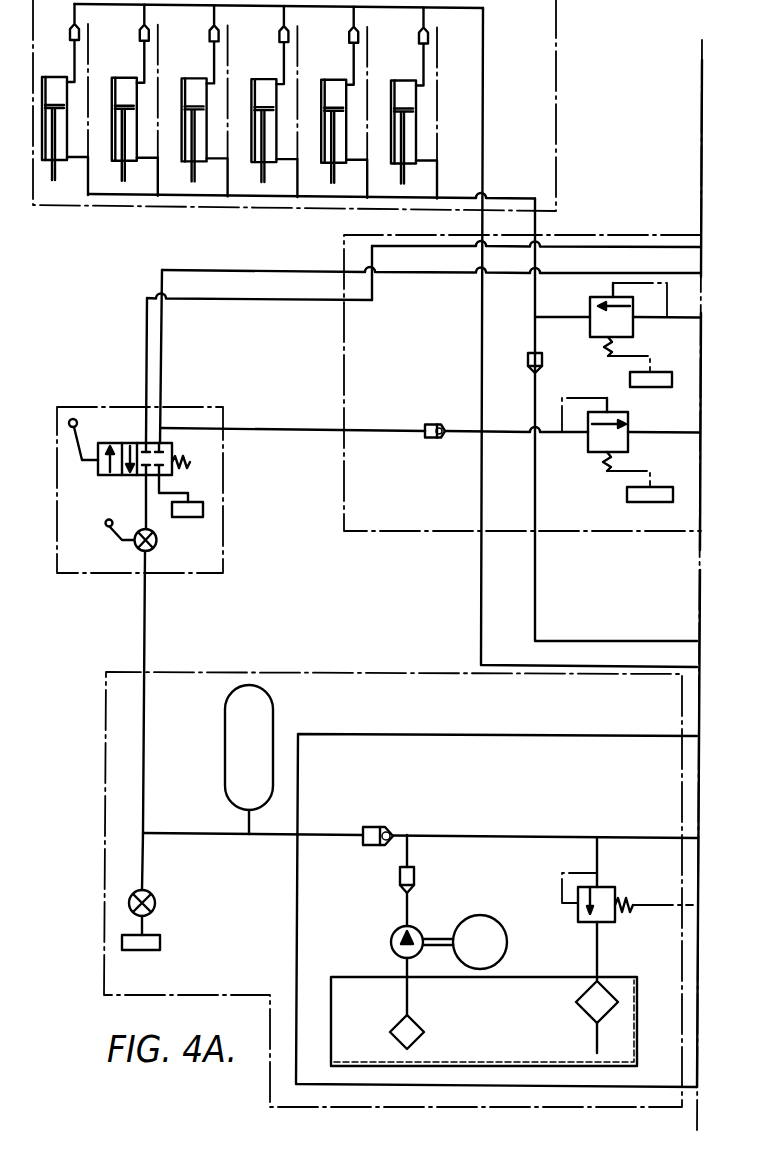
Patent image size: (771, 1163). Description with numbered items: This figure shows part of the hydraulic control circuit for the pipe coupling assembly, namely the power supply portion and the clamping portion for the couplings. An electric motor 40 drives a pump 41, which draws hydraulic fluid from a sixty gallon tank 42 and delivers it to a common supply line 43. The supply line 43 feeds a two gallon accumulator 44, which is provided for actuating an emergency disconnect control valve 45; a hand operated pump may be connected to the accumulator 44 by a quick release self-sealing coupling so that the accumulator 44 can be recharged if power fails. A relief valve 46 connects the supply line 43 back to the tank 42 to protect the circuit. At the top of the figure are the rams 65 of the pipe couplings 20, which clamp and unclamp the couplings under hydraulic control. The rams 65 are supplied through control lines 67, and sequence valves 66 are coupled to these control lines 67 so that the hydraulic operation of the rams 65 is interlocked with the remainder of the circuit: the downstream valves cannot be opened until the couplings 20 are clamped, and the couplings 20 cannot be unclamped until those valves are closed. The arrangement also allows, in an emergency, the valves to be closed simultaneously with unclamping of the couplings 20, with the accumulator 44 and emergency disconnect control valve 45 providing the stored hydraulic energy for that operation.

The pipe coupling 20 is at (145, 180).
The ram 65 is at (58, 77).
The sequence valve 66 is at (590, 323).
The control line 67 is at (480, 603).
The emergency disconnect control valve 45 is at (117, 477).
The accumulator 44 is at (225, 719).
The common supply line 43 is at (503, 833).
The relief valve 46 is at (598, 903).
The pump 41 is at (391, 942).
The electric motor 40 is at (507, 945).
The tank 42 is at (504, 1062).